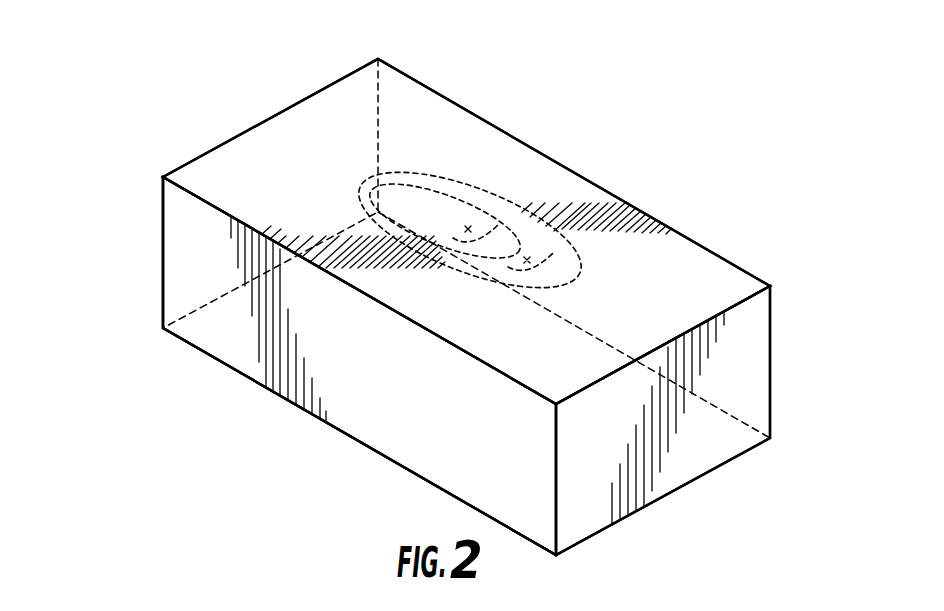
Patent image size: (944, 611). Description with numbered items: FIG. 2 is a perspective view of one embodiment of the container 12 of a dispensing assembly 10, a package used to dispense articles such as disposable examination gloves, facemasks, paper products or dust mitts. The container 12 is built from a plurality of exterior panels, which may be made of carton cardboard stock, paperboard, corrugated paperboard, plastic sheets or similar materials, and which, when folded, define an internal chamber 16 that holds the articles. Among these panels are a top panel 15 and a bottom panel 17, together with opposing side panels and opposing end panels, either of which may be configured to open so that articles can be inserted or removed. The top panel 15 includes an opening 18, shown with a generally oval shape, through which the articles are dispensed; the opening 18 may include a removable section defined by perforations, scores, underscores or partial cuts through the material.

The dispensing assembly 10 is at (727, 148).
The container 12 is at (451, 95).
The top panel 15 is at (548, 177).
The internal chamber 16 is at (403, 385).
The bottom panel 17 is at (371, 412).
The opening 18 is at (455, 205).